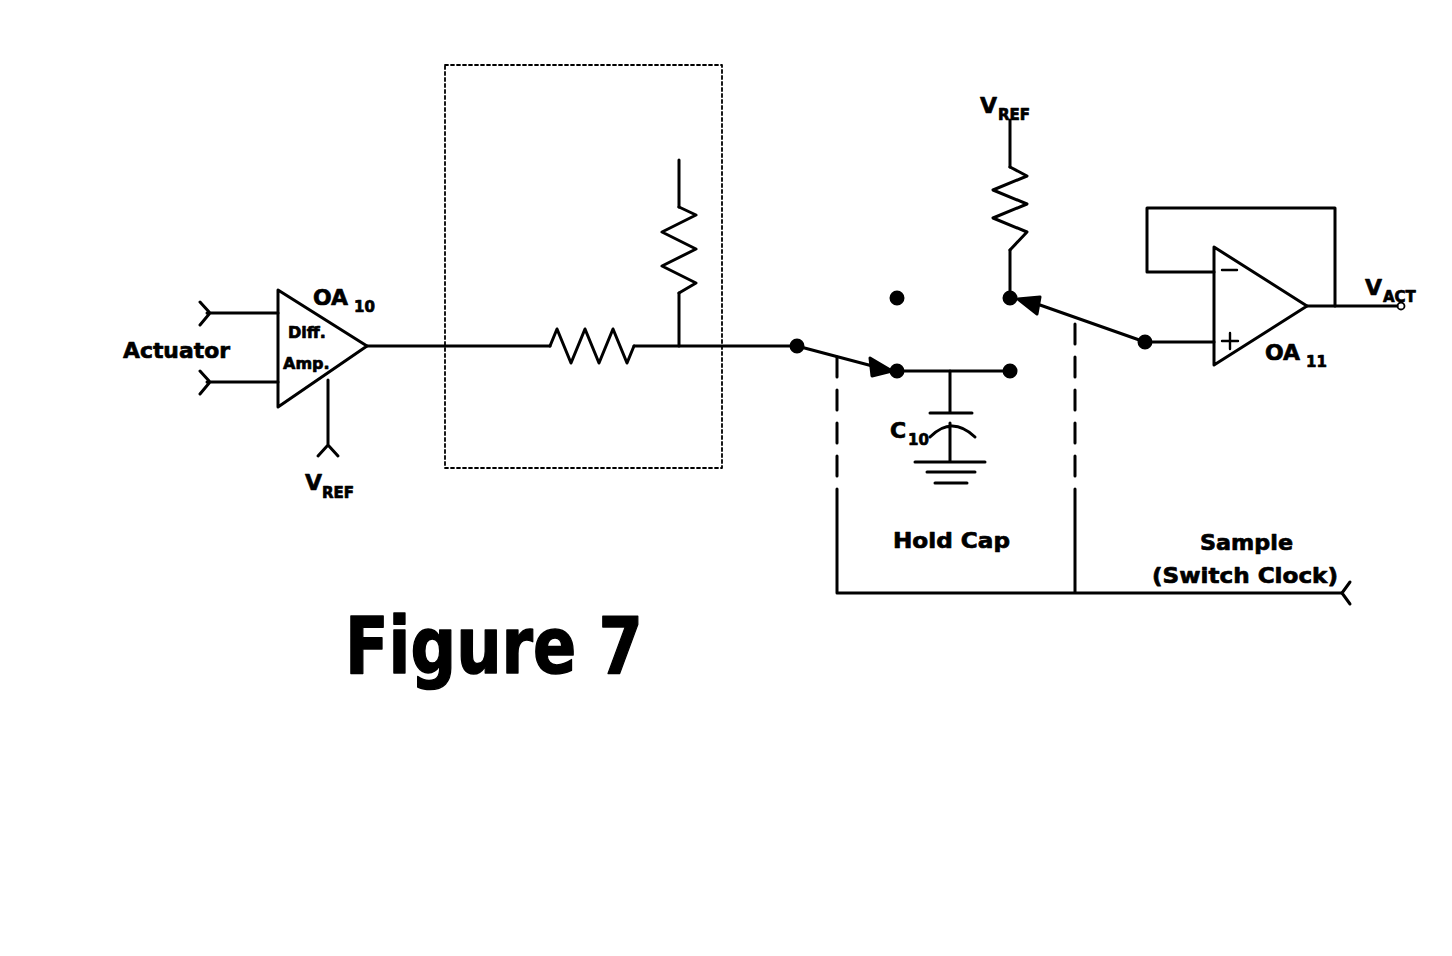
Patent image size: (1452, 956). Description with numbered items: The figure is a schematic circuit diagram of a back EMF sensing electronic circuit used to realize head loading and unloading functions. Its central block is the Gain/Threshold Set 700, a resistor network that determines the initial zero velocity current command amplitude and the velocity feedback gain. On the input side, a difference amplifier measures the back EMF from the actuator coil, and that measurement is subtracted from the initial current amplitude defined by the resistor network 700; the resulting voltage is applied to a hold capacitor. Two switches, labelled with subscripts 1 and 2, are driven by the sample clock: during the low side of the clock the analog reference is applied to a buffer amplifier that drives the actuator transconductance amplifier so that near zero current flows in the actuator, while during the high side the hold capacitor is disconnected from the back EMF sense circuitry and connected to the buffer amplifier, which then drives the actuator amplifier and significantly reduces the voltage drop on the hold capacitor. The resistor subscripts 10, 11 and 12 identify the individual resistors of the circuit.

The Gain/Threshold Set 700 is at (583, 266).
The resistor R10 10 is at (592, 332).
The resistor R11 11 is at (657, 253).
The resistor R12 12 is at (987, 209).
The switch S1 1 is at (847, 334).
The switch S2 2 is at (1084, 340).